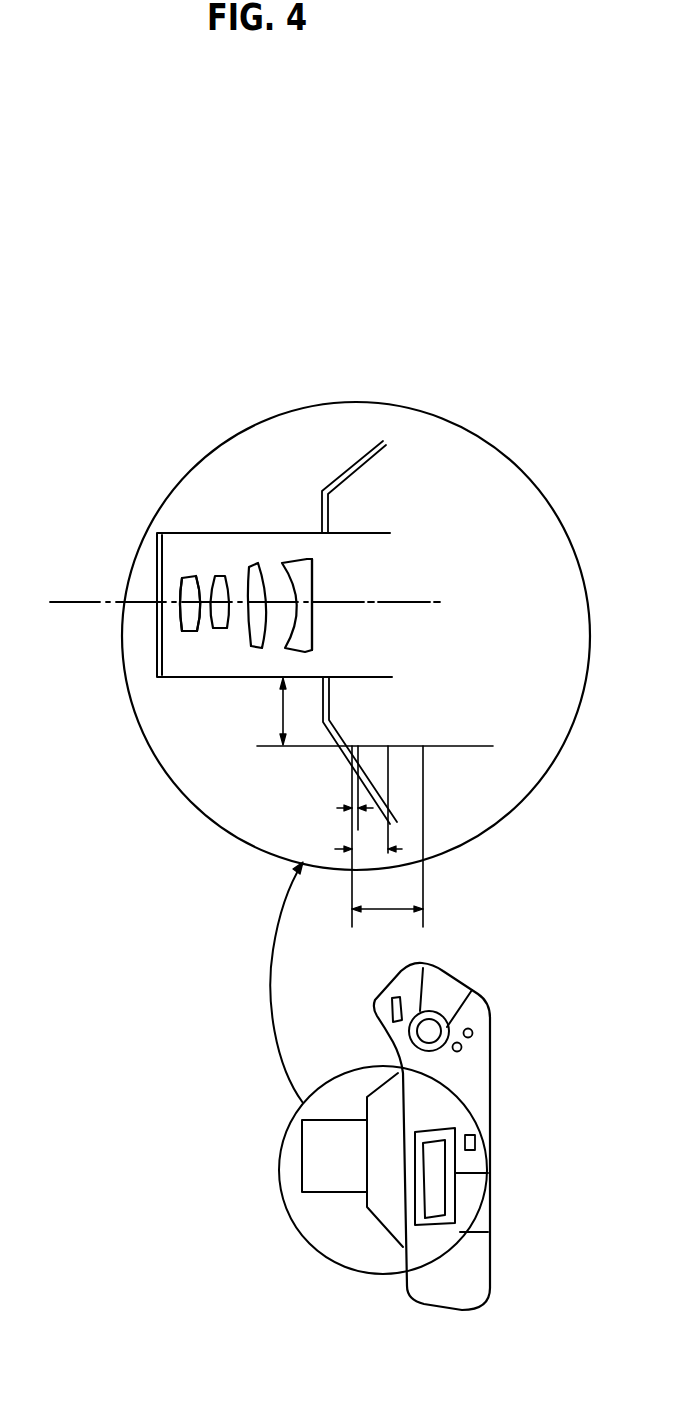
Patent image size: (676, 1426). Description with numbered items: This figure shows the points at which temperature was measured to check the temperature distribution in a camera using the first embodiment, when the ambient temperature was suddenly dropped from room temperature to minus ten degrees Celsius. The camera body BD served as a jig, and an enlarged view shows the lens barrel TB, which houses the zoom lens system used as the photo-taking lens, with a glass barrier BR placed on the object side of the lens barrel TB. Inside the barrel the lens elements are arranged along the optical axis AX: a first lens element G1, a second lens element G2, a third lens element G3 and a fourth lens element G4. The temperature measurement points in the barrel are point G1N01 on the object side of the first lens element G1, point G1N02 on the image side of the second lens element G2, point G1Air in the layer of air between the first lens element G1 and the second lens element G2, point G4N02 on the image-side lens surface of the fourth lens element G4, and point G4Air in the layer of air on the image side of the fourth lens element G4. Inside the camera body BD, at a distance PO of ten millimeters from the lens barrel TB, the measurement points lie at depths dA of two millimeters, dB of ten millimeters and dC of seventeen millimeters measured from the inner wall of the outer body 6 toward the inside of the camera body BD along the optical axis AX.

The lens barrel TB is at (157, 678).
The glass barrier BR is at (157, 640).
The outer body 6 is at (330, 696).
The optical axis AX is at (70, 600).
The first lens element G1 is at (193, 632).
The second lens element G2 is at (216, 629).
The third lens element G3 is at (254, 648).
The fourth lens element G4 is at (312, 630).
The temperature measurement point on object side of first lens element G1N01 is at (183, 577).
The temperature measurement point on image side of second lens element G1N02 is at (197, 576).
The temperature measurement point in air layer between first and second lens element G1Air is at (204, 602).
The temperature measurement point on image-side surface of fourth lens element G4N02 is at (308, 559).
The temperature measurement point in air layer on image side of fourth lens element G4Air is at (344, 602).
The distance from lens barrel to camera body measurement region PO is at (363, 712).
The first measurement depth dA is at (329, 791).
The second measurement depth dB is at (343, 833).
The third measurement depth dC is at (387, 896).
The camera body BD is at (483, 1025).